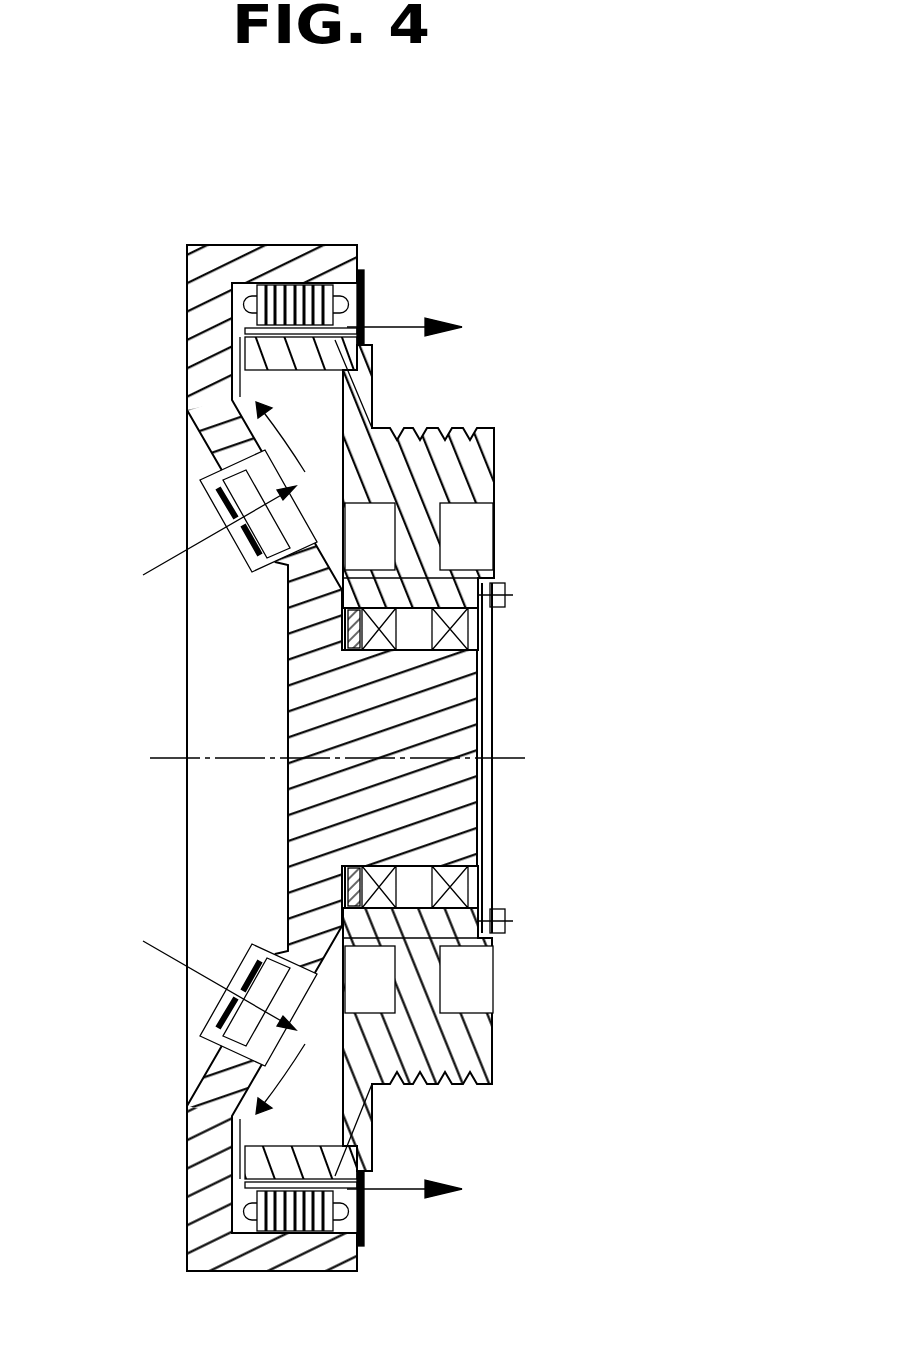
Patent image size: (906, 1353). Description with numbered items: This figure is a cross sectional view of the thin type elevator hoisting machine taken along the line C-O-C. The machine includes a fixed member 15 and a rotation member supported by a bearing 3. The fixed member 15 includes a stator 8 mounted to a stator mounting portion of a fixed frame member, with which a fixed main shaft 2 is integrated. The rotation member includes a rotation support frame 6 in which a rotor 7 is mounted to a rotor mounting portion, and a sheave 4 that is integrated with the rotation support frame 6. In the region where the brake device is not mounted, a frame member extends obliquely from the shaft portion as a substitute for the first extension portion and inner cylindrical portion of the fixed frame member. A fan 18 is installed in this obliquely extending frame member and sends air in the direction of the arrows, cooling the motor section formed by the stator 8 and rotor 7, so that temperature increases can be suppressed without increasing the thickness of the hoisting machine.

The fixed main shaft 2 is at (425, 713).
The bearing 3 is at (462, 630).
The sheave 4 is at (497, 462).
The rotation support frame 6 is at (362, 407).
The rotor 7 is at (240, 365).
The stator 8 is at (312, 285).
The fixed member 15 is at (298, 853).
The fan 18 is at (200, 498).